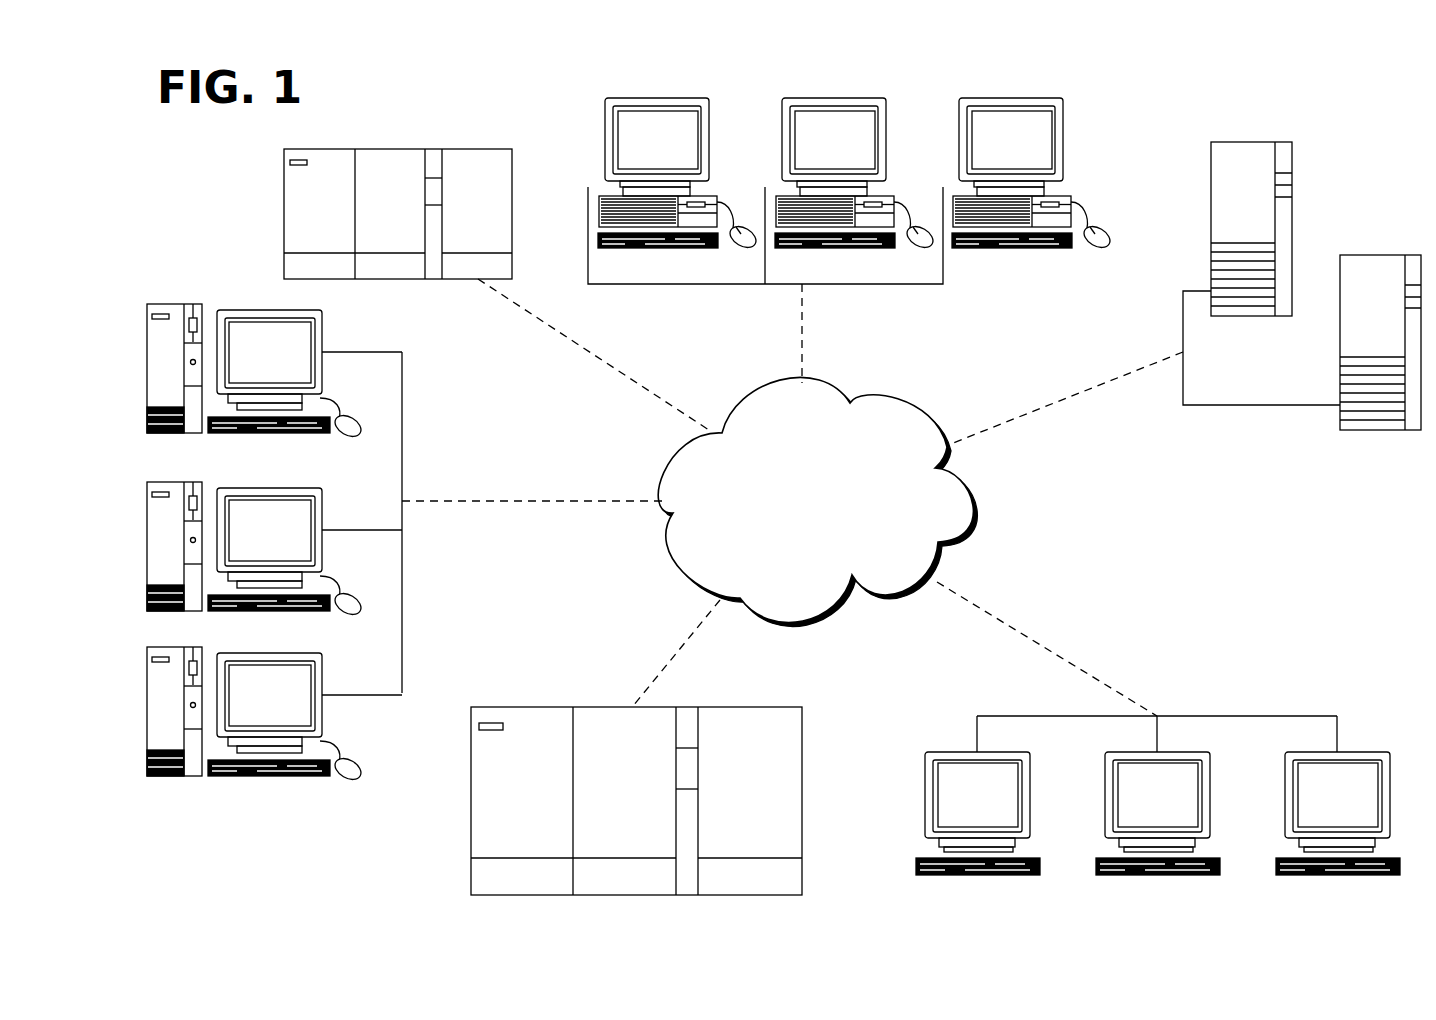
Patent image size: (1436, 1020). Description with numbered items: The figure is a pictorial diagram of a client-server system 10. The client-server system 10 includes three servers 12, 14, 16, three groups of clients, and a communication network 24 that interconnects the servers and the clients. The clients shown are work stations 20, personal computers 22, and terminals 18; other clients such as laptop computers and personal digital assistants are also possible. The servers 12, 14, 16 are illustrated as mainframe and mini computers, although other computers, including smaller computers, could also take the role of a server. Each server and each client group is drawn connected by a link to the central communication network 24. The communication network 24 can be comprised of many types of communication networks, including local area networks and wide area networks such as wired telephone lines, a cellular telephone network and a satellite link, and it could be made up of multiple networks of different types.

The client-server system 10 is at (400, 99).
The server 12 is at (284, 180).
The server 14 is at (1351, 125).
The server 16 is at (755, 706).
The terminals 18 is at (1220, 684).
The work stations 20 is at (385, 620).
The personal computers 22 is at (866, 263).
The communication network 24 is at (843, 603).